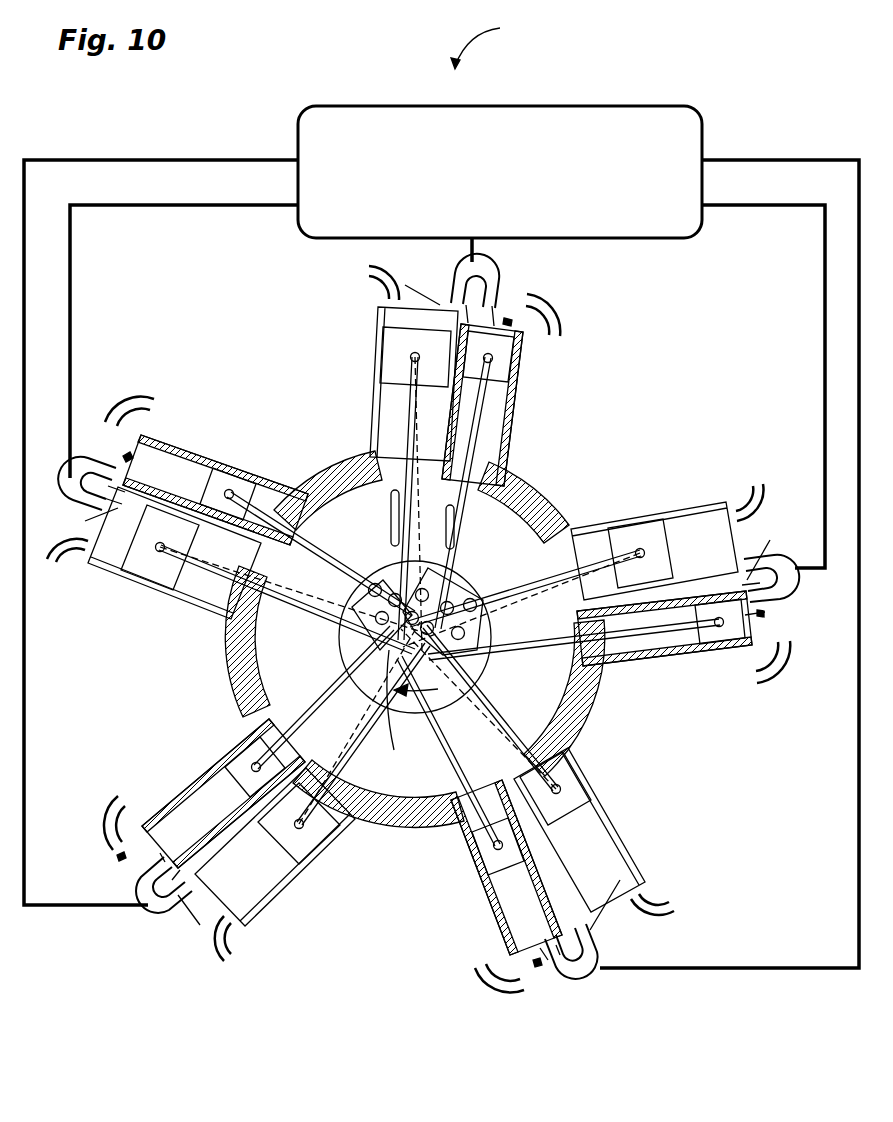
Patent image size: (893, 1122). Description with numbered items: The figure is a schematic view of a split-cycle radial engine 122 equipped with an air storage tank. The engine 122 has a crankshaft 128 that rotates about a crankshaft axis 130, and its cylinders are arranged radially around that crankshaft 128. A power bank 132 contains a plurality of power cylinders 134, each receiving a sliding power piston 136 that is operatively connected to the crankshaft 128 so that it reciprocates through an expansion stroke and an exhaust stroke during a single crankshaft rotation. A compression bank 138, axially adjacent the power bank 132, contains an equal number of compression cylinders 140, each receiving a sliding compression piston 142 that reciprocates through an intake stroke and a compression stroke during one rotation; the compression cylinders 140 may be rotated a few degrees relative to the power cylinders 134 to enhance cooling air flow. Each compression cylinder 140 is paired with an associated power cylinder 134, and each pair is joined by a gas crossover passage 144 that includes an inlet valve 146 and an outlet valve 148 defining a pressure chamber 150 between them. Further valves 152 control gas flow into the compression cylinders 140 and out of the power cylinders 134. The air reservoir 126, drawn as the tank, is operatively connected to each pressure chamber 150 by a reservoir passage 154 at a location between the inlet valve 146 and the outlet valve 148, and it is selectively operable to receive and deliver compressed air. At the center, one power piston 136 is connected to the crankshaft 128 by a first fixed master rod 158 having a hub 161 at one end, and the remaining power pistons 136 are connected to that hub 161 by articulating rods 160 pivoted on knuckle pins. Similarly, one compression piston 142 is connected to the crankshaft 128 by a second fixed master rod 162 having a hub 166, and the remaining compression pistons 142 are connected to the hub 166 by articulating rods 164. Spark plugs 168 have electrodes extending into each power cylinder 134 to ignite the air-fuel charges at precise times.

The split-cycle radial engine 122 is at (493, 42).
The air reservoir 126 is at (580, 105).
The crankshaft 128 is at (415, 713).
The crankshaft axis 130 is at (392, 750).
The power bank 132 is at (512, 465).
The power cylinder 134 is at (522, 350).
The power piston 136 is at (506, 412).
The compression bank 138 is at (572, 518).
The compression cylinder 140 is at (380, 322).
The compression piston 142 is at (395, 372).
The gas crossover passage 144 is at (436, 637).
The inlet valve 146 is at (405, 285).
The outlet valve 148 is at (495, 302).
The pressure chamber 150 is at (450, 284).
The valves 152 is at (368, 275).
The reservoir passage 154 is at (150, 160).
The first fixed master rod 158 is at (470, 560).
The articulating rods 160 is at (345, 560).
The hub 161 is at (478, 650).
The second fixed master rod 162 is at (390, 552).
The articulating rods 164 is at (490, 570).
The hub 166 is at (352, 630).
The spark plugs 168 is at (512, 318).